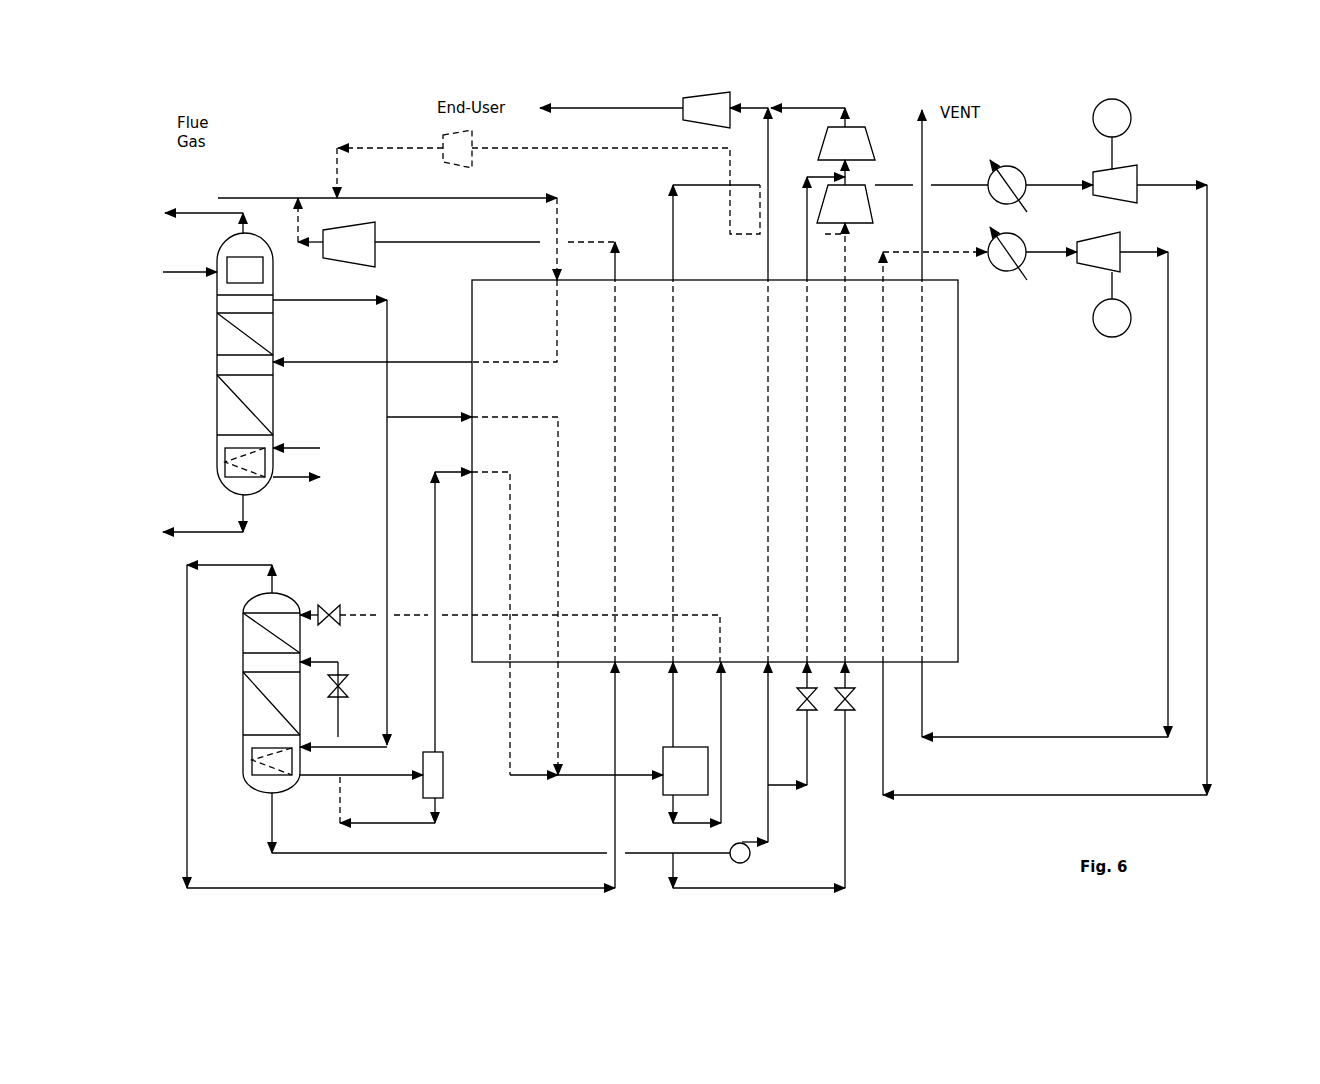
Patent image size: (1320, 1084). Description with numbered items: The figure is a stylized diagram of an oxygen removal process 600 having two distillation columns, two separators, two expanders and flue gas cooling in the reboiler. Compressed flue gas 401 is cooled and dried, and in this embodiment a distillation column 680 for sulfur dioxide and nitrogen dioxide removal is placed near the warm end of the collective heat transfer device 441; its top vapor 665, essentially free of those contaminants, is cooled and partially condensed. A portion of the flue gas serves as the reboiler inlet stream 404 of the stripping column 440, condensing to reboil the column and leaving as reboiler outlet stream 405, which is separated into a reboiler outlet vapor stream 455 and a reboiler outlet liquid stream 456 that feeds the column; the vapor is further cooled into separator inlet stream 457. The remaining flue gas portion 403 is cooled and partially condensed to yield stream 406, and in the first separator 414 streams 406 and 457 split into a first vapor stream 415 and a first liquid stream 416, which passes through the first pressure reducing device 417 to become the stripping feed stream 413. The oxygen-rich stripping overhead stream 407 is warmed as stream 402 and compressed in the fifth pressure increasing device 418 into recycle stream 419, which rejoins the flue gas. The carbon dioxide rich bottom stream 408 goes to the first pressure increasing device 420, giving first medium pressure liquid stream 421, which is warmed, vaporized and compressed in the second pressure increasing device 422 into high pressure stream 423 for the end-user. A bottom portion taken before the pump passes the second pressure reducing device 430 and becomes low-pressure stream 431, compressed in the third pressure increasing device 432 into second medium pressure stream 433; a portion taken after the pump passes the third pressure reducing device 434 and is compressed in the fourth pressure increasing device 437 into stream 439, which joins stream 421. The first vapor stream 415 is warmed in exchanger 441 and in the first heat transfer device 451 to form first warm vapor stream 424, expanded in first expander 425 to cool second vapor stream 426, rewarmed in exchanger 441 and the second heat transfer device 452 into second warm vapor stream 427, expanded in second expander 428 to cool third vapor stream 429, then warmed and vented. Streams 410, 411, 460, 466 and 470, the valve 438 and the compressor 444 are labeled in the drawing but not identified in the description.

The compressed flue gas stream 401 is at (293, 189).
The warmed stripping column overhead stream 402 is at (495, 261).
The remaining portion of the flue gas 403 is at (473, 230).
The reboiler inlet stream 404 is at (343, 523).
The reboiler outlet stream 405 is at (371, 778).
The cooled partially condensed flue gas stream 406 is at (596, 718).
The stripping overhead stream 407 is at (401, 584).
The stripping column bottom stream 408 is at (501, 823).
The steam stream 410 is at (700, 232).
The steam stream to turbine 411 is at (816, 209).
The stripping feed stream 413 is at (354, 545).
The first separator 414 is at (692, 742).
The first vapor stream 415 is at (661, 513).
The first liquid stream 416 is at (770, 561).
The first pressure reducing device 417 is at (510, 617).
The fifth pressure increasing device 418 is at (349, 244).
The recycle stream 419 is at (306, 236).
The first pressure increasing device 420 is at (755, 860).
The first medium pressure liquid stream 421 is at (715, 471).
The second pressure increasing device 422 is at (706, 110).
The high pressure stream 423 is at (611, 100).
The first warm vapor stream 424 is at (1059, 172).
The first expander 425 is at (1115, 151).
The cool second vapor stream 426 is at (1068, 490).
The second warm vapor stream 427 is at (1051, 239).
The second expander 428 is at (1104, 284).
The cool third vapor stream 429 is at (1045, 423).
The second pressure reducing device 430 is at (852, 710).
The low-pressure stream 431 is at (832, 442).
The third pressure increasing device 432 is at (845, 204).
The second medium pressure stream 433 is at (924, 177).
The third pressure reducing device 434 is at (760, 799).
The fourth pressure increasing device 437 is at (846, 156).
The control valve 438 is at (822, 532).
The second medium-pressure stream 439 is at (787, 181).
The stripping column 440 is at (248, 716).
The collective heat transfer device 441 is at (958, 420).
The auxiliary compressor 444 is at (548, 173).
The first heat transfer device 451 is at (1007, 166).
The second heat transfer device 452 is at (955, 273).
The reboiler outlet vapor stream 455 is at (472, 612).
The reboiler outlet liquid stream 456 is at (387, 811).
The separator inlet stream 457 is at (520, 718).
The heated stream to absorber 460 is at (415, 336).
The stream from absorber 466 is at (472, 530).
The treated gas stream 470 is at (203, 513).
The system 600 is at (935, 823).
The top vapor 665 is at (349, 318).
The distillation column 680 is at (227, 337).